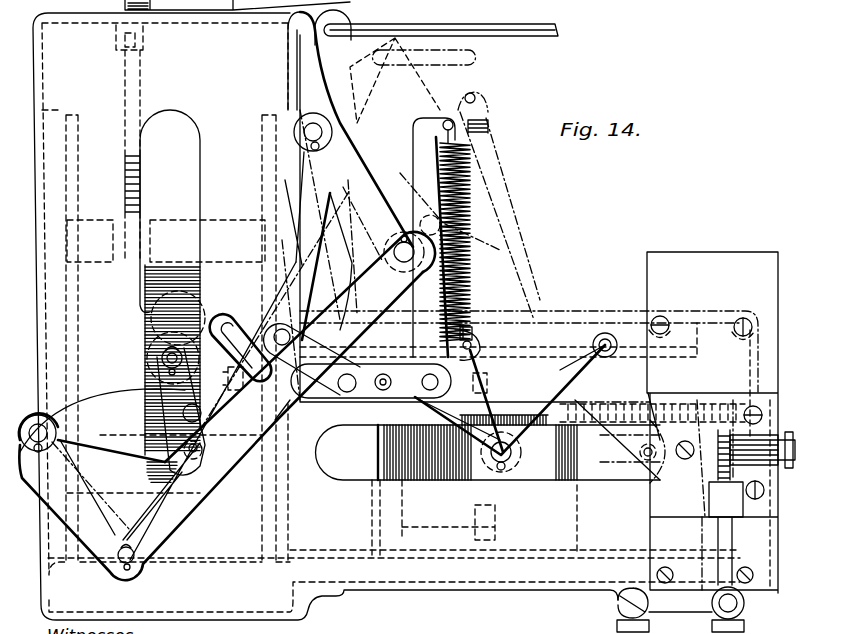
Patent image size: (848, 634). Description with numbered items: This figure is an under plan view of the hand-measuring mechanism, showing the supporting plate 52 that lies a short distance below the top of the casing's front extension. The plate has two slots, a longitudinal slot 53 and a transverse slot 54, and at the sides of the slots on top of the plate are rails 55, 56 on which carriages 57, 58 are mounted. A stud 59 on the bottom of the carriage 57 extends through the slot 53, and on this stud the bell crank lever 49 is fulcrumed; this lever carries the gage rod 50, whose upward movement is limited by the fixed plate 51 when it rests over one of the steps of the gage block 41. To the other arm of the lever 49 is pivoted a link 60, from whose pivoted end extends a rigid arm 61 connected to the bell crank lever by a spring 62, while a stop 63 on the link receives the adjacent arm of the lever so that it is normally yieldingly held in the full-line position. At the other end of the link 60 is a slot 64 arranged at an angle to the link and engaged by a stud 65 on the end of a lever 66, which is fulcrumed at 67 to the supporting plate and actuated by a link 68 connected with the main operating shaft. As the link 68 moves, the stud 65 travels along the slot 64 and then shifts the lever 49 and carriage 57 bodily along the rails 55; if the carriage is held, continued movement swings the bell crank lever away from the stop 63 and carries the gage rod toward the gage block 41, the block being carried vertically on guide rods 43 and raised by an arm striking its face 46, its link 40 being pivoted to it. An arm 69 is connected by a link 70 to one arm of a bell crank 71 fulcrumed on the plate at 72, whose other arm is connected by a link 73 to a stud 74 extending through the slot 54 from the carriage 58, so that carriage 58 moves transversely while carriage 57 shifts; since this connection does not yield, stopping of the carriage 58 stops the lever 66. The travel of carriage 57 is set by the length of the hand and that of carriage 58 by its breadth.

The link 40 is at (767, 463).
The gage block 41 is at (690, 491).
The guide rods 43 is at (712, 612).
The face 46 is at (712, 497).
The bell crank lever 49 is at (596, 374).
The gage rod 50 is at (607, 333).
The fixed plate 51 is at (712, 422).
The supporting plate 52 is at (386, 316).
The slot 53 is at (530, 464).
The slot 54 is at (162, 211).
The rails 55 is at (680, 355).
The rails 56 is at (74, 156).
The carriage 57 is at (580, 478).
The carriage 58 is at (185, 265).
The stud 59 is at (510, 468).
The link 60 is at (358, 396).
The rigid arm 61 is at (450, 248).
The spring 62 is at (460, 212).
The stop 63 is at (385, 374).
The slot 64 is at (232, 340).
The stud 65 is at (288, 417).
The lever 66 is at (358, 88).
The fulcrum 67 is at (320, 154).
The link 68 is at (500, 36).
The arm 69 is at (366, 185).
The link 70 is at (332, 317).
The bell crank 71 is at (48, 472).
The fulcrum 72 is at (34, 414).
The link 73 is at (190, 390).
The stud 74 is at (184, 359).